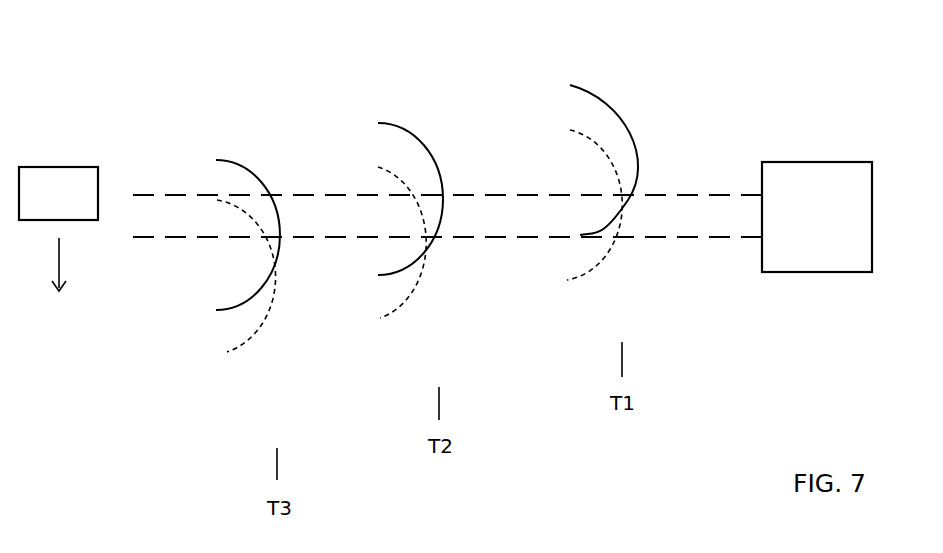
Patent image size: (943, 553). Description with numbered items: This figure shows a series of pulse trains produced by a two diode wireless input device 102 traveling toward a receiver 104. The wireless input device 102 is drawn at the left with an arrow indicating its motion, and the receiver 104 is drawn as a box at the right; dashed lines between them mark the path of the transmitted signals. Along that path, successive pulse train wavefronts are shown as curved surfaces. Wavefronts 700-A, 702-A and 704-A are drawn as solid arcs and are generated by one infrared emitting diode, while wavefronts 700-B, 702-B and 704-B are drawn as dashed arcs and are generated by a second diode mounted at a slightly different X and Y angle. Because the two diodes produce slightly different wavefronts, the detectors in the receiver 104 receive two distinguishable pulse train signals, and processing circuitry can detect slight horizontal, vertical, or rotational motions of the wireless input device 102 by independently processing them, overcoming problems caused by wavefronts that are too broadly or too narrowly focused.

The wireless input device 102 is at (58, 229).
The receiver 104 is at (836, 241).
The wavefront 700-A is at (607, 98).
The wavefront 700-B is at (567, 280).
The wavefront 702-A is at (412, 132).
The wavefront 702-B is at (380, 318).
The third lens surface at time T3 (solid position) 704-A is at (240, 162).
The third lens surface at time T3 (displaced position) 704-B is at (227, 352).